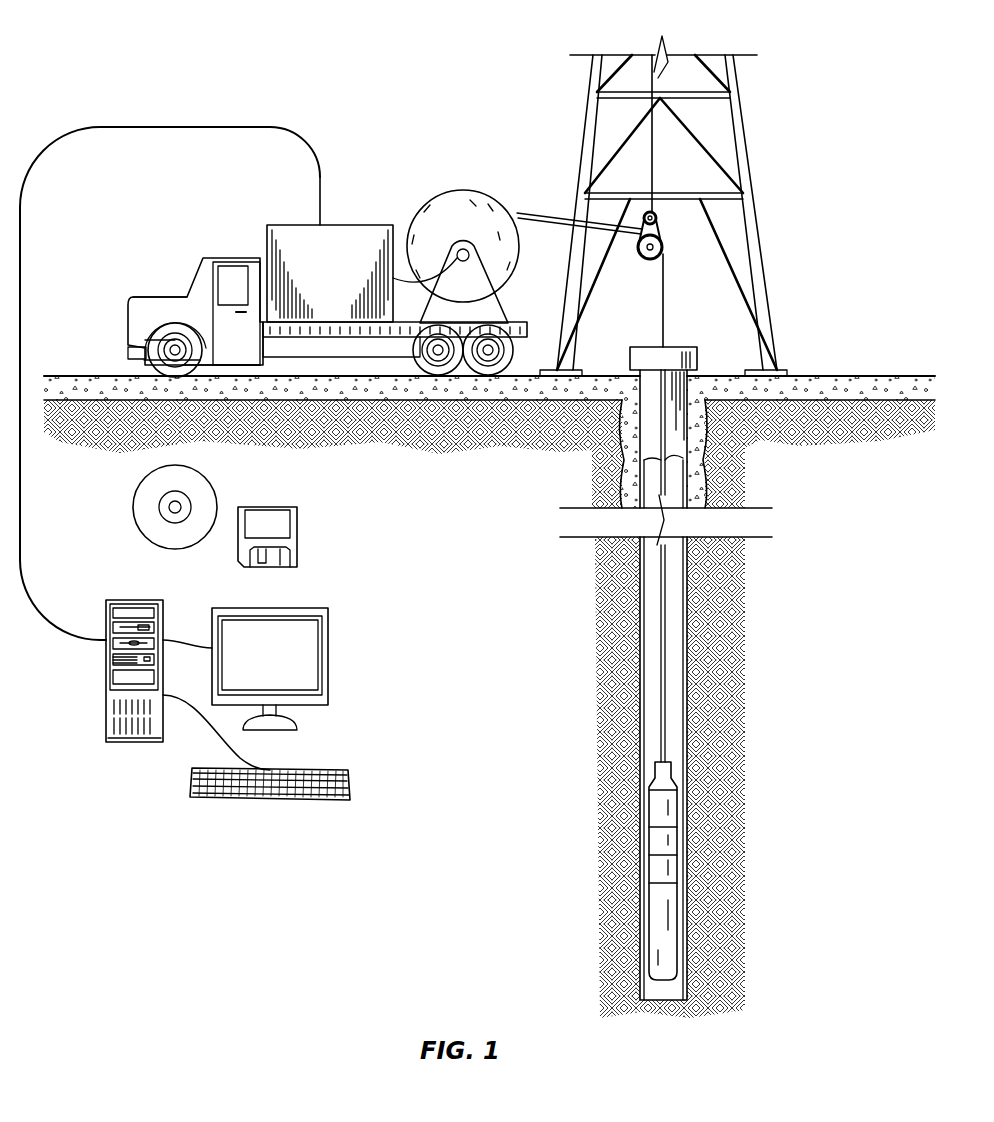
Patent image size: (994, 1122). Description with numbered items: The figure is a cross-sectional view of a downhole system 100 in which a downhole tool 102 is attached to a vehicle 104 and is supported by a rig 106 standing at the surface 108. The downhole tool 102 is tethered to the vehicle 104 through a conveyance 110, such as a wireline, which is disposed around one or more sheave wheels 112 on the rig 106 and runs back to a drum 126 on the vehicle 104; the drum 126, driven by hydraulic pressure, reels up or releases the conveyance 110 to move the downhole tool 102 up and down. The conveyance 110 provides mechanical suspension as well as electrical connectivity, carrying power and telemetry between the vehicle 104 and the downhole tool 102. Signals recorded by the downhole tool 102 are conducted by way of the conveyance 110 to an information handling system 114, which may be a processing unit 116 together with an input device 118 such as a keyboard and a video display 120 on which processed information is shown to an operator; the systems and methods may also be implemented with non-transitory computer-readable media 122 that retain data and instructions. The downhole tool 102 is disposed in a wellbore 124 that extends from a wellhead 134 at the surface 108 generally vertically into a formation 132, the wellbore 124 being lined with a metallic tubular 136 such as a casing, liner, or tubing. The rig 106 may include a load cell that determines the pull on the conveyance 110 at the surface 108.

The downhole system 100 is at (128, 50).
The downhole tool 102 is at (633, 843).
The vehicle 104 is at (337, 225).
The rig 106 is at (770, 204).
The surface 108 is at (823, 377).
The conveyance 110 is at (660, 628).
The sheave wheels 112 is at (642, 262).
The information handling system 114 is at (126, 828).
The processing unit 116 is at (135, 600).
The input device 118 is at (350, 782).
The video display 120 is at (270, 608).
The non-transitory computer-readable media 122 is at (200, 467).
The wellbore 124 is at (703, 500).
The drum 126 is at (462, 192).
The formation 132 is at (862, 618).
The wellhead 134 is at (704, 357).
The tubular 136 is at (660, 424).